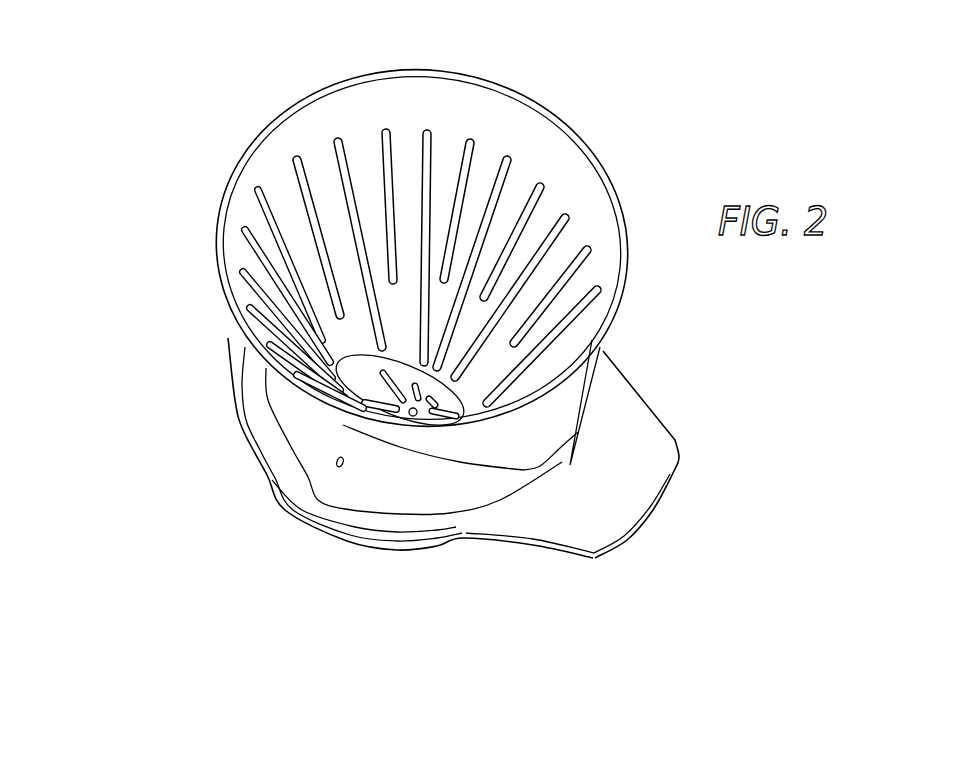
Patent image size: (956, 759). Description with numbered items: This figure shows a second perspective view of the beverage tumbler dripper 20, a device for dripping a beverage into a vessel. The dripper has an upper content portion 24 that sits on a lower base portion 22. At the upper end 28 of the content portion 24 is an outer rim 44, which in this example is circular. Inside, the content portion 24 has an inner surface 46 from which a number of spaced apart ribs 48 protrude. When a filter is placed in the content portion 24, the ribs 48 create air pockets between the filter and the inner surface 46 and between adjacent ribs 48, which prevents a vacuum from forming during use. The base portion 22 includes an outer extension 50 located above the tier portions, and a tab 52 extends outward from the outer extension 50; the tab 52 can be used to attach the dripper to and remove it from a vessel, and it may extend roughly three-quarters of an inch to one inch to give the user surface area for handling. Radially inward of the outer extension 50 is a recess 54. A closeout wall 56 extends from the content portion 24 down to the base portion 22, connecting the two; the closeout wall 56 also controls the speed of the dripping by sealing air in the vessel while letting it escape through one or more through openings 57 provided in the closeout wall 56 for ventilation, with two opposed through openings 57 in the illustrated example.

The beverage tumbler dripper 20 is at (76, 130).
The base portion 22 is at (226, 462).
The content portion 24 is at (563, 177).
The upper end 28 is at (204, 161).
The outer rim 44 is at (452, 70).
The inner surface 46 is at (527, 142).
The ribs 48 is at (350, 160).
The outer extension 50 is at (232, 402).
The tab 52 is at (632, 433).
The recess 54 is at (356, 513).
The closeout wall 56 is at (403, 485).
The through openings 57 is at (337, 470).